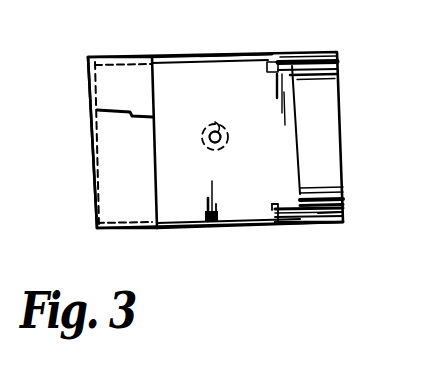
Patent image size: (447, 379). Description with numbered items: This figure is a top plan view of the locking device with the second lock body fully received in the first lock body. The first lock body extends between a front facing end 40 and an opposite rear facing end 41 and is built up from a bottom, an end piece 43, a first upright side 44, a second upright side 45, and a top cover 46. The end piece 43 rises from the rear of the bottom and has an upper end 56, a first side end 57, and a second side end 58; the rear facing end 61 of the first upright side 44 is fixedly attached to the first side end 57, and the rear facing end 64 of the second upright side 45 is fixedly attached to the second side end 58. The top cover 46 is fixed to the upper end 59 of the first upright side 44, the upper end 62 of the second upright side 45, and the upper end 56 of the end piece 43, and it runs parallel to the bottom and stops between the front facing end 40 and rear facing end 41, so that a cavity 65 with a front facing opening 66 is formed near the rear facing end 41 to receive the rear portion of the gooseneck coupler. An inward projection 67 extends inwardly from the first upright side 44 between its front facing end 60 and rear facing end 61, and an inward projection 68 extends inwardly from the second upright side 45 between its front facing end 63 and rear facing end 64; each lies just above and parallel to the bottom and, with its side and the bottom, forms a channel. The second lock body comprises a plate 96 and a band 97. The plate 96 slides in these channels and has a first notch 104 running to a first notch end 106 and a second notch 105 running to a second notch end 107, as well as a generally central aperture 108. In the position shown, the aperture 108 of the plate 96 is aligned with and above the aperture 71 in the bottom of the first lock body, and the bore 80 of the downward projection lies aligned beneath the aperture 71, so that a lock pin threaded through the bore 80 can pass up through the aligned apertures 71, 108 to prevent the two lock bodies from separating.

The front facing end 40 is at (343, 136).
The rear facing end 41 is at (87, 93).
The end piece 43 is at (96, 190).
The first upright side 44 is at (200, 227).
The second upright side 45 is at (236, 55).
The top cover 46 is at (105, 191).
The upper end 56 is at (100, 148).
The first side end 57 is at (100, 228).
The second side end 58 is at (95, 64).
The upper end 59 is at (178, 229).
The front facing end 60 is at (343, 218).
The rear facing end 61 is at (97, 232).
The upper end 62 is at (195, 57).
The front facing end 63 is at (340, 66).
The rear facing end 64 is at (88, 58).
The cavity 65 is at (153, 113).
The front facing opening 66 is at (157, 192).
The inward projection 67 is at (318, 224).
The inward projection 68 is at (325, 55).
The aperture 71 is at (221, 133).
The bore 80 is at (218, 132).
The plate 96 is at (227, 201).
The band 97 is at (343, 190).
The first notch 104 is at (280, 224).
The second notch 105 is at (282, 54).
The first notch end 106 is at (270, 207).
The second notch end 107 is at (267, 70).
The aperture 108 is at (222, 144).